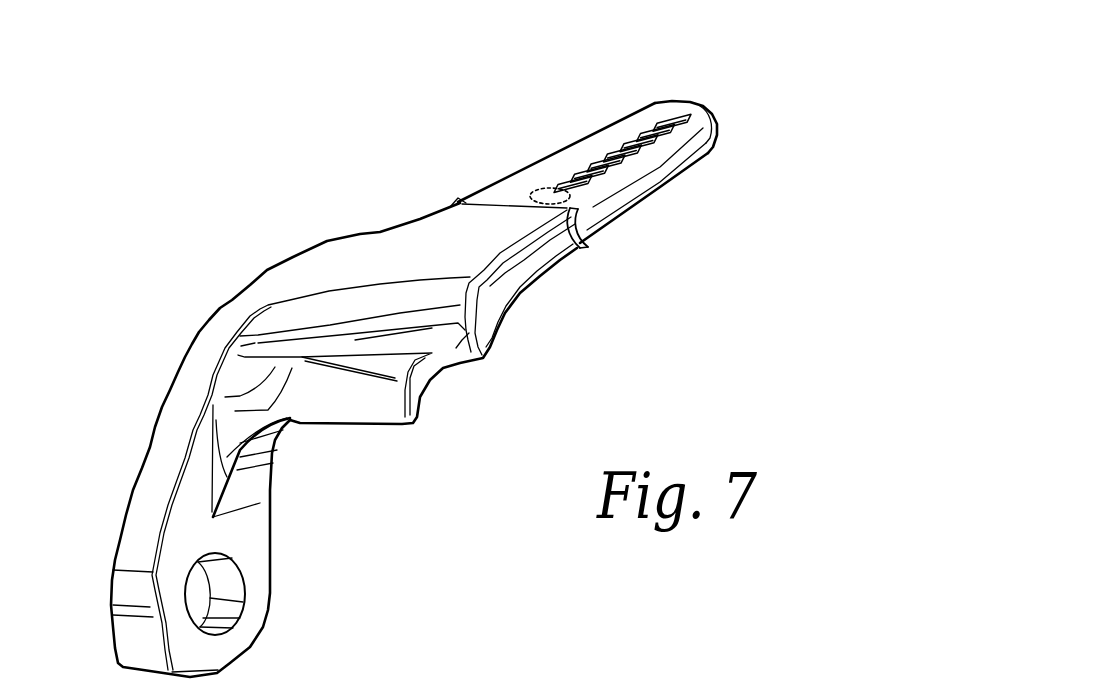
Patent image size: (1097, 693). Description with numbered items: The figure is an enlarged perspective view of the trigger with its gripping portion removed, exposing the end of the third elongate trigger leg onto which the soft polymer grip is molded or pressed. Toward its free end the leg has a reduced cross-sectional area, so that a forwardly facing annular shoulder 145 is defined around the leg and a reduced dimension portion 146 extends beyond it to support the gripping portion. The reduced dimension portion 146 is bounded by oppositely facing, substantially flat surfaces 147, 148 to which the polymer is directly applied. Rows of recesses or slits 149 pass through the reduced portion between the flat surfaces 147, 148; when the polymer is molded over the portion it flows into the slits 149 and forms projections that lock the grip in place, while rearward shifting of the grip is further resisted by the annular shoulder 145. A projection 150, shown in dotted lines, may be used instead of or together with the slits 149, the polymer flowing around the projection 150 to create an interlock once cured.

The annular shoulder 145 is at (496, 205).
The reduced dimension portion 146 is at (603, 118).
The flat surface 147 is at (553, 170).
The flat surface 148 is at (637, 200).
The recesses/slits 149 is at (640, 127).
The projection 150 is at (595, 210).